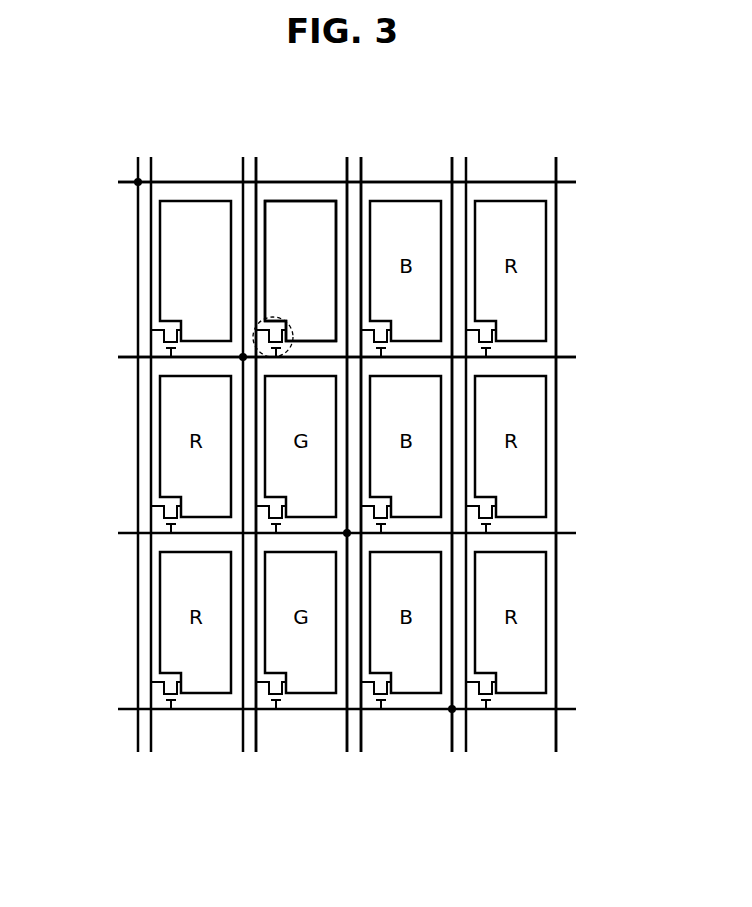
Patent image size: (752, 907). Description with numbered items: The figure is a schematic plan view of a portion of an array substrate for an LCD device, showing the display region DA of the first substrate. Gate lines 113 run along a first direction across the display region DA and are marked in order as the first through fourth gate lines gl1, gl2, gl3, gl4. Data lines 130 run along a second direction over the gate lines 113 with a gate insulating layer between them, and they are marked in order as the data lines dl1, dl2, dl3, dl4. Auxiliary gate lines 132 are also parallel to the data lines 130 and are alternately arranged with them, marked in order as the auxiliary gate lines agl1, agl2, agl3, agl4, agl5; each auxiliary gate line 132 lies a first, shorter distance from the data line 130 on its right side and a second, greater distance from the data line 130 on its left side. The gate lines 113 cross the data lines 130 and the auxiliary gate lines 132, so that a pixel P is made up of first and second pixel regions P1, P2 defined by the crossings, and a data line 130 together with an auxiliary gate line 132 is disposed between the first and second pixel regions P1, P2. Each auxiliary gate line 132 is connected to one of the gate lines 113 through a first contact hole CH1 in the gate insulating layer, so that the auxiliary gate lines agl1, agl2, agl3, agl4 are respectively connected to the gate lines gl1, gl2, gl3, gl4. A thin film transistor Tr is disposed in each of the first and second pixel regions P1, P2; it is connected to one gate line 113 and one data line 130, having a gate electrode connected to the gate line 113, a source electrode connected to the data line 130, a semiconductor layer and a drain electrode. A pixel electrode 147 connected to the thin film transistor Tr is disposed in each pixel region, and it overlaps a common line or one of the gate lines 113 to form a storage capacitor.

The first gate line gl1 is at (322, 182).
The second gate line gl2 is at (322, 357).
The third gate line gl3 is at (322, 533).
The fourth gate line gl4 is at (322, 709).
The first auxiliary gate line agl1 is at (138, 752).
The second auxiliary gate line agl2 is at (243, 752).
The third auxiliary gate line agl3 is at (347, 752).
The fourth auxiliary gate line agl4 is at (452, 752).
The fifth auxiliary gate line agl5 is at (556, 752).
The first data line dl1 is at (151, 752).
The second data line dl2 is at (256, 752).
The third data line dl3 is at (361, 752).
The fourth data line dl4 is at (466, 752).
The data line 130 is at (362, 162).
The auxiliary gate line 132 is at (451, 168).
The gate line 113 is at (507, 358).
The pixel electrode 147 is at (322, 342).
The pixel P is at (248, 198).
The first pixel region P1 is at (189, 218).
The second pixel region P2 is at (288, 218).
The thin film transistor Tr is at (273, 358).
The first contact hole CH1 is at (336, 544).
The display region DA is at (521, 149).